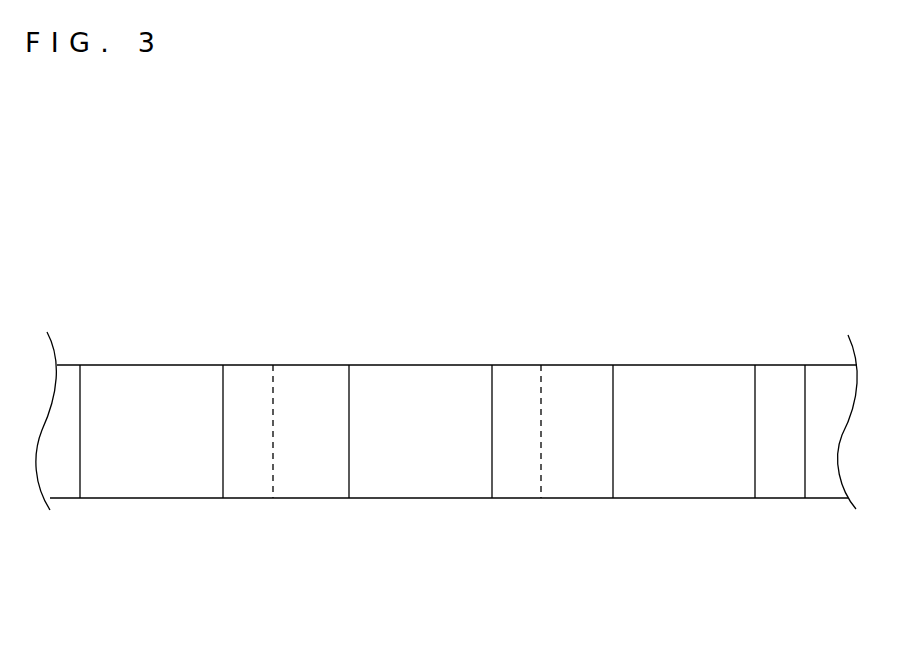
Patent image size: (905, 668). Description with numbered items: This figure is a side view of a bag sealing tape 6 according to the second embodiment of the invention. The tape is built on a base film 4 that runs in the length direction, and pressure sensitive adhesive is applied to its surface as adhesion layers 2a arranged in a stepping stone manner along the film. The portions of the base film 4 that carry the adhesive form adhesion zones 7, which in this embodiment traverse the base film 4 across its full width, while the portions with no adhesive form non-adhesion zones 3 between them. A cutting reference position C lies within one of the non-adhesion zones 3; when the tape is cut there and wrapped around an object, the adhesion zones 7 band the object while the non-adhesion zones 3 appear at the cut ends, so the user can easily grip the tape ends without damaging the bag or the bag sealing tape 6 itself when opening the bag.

The bag sealing tape 6 is at (385, 318).
The adhesion layer 2a is at (131, 465).
The base film 4 is at (308, 477).
The non-adhesion zone 3 is at (615, 513).
The cutting reference position C is at (549, 376).
The adhesion zone 7 is at (613, 343).